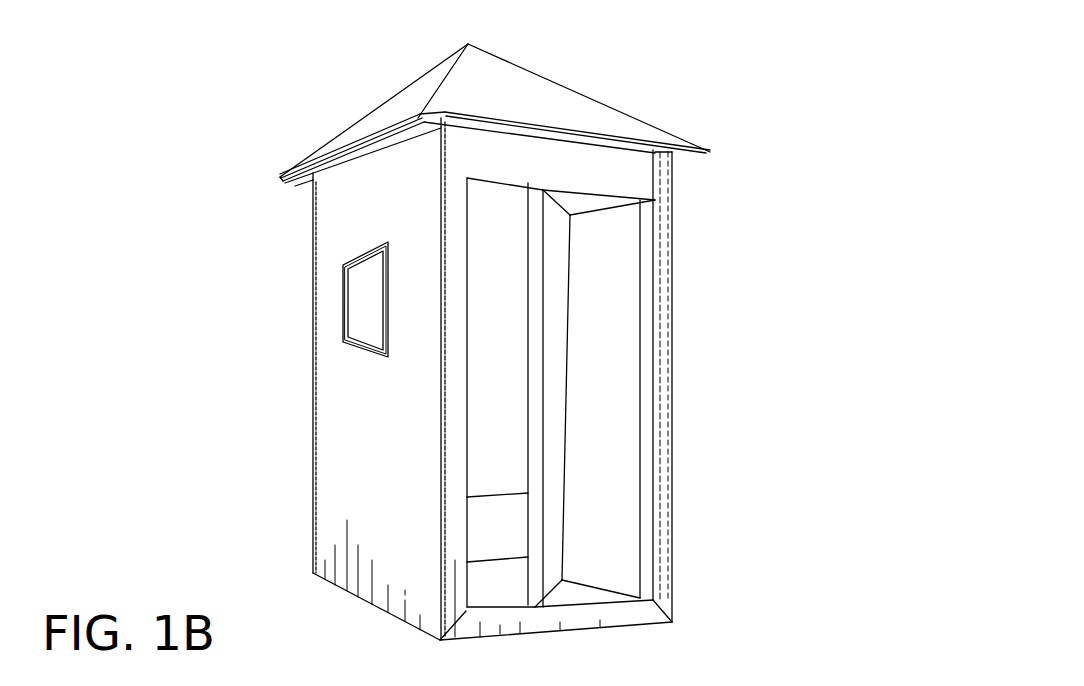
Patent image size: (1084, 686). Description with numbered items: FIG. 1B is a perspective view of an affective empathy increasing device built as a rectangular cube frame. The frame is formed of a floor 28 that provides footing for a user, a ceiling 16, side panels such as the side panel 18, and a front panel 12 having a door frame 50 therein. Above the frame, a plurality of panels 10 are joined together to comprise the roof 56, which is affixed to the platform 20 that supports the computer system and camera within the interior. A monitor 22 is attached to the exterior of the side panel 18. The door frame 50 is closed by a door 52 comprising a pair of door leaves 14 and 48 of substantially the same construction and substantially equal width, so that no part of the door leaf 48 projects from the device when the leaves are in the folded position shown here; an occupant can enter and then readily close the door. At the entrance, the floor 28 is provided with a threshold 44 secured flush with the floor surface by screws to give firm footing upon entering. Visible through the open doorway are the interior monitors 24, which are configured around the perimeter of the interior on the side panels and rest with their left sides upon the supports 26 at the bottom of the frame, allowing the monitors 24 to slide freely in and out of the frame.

The panels 10 is at (388, 115).
The front panel 12 is at (642, 175).
The door leaf 14 is at (588, 538).
The ceiling 16 is at (310, 185).
The side panel 18 is at (357, 383).
The platform 20 is at (280, 177).
The monitor 22 is at (370, 313).
The monitors 24 is at (490, 443).
The supports 26 is at (478, 530).
The floor 28 is at (478, 608).
The threshold 44 is at (580, 620).
The door leaf 48 is at (548, 400).
The door frame 50 is at (655, 270).
The door 52 is at (775, 587).
The roof 56 is at (295, 60).